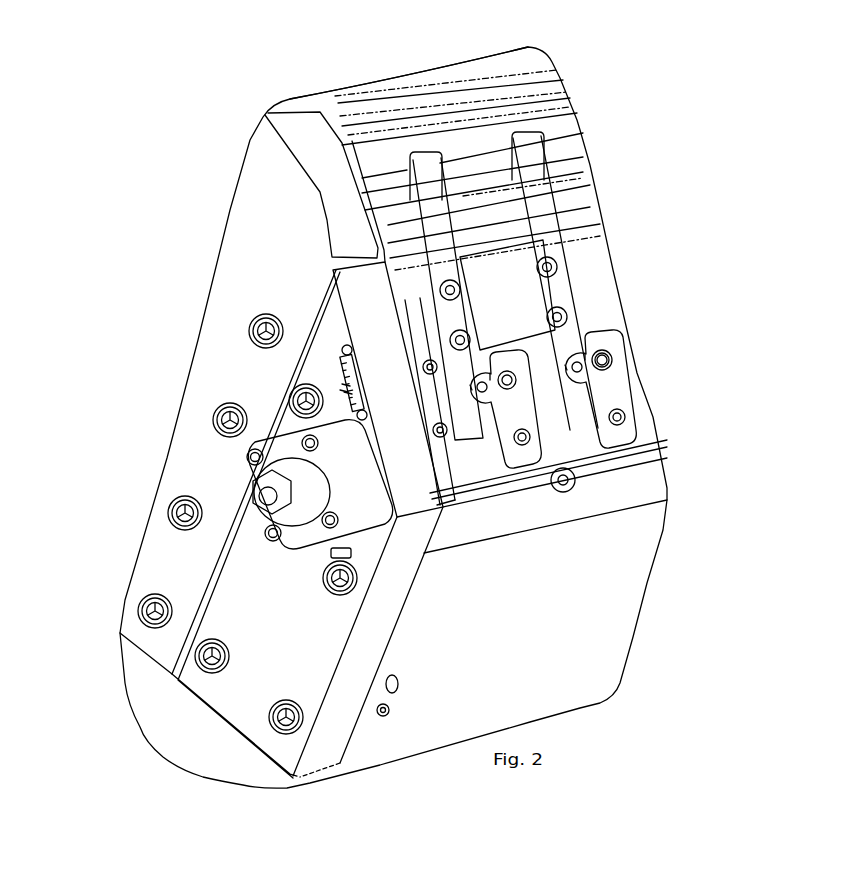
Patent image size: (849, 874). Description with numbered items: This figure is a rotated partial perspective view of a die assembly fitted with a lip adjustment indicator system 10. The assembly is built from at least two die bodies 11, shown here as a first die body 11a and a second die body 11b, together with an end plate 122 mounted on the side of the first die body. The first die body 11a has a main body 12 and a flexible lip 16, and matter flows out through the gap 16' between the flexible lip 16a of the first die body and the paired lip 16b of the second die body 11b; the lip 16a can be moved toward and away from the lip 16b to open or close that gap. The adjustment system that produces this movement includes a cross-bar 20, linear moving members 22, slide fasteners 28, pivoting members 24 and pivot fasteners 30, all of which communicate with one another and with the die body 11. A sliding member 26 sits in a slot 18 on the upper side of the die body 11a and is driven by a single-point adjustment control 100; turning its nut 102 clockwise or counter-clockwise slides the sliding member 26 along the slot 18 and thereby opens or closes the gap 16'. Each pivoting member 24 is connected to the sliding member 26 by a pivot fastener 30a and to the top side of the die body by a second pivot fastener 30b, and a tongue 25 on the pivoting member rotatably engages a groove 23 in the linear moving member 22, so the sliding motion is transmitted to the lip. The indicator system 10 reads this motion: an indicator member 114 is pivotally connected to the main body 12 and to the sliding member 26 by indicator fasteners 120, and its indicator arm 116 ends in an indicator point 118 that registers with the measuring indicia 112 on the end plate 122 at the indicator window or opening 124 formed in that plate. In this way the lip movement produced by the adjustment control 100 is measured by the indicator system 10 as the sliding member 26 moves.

The lip adjustment indicator system 10 is at (338, 313).
The die body 11 is at (590, 195).
The first die body 11a is at (592, 127).
The second die body 11b is at (333, 85).
The main body 12 is at (610, 680).
The lip 16 is at (499, 97).
The gap 16' is at (366, 96).
The flexible lip 16a is at (558, 92).
The lip 16b is at (547, 68).
The slot 18 is at (517, 483).
The cross-bar 20 is at (527, 147).
The linear moving member 22 is at (540, 208).
The groove 23 is at (483, 407).
The pivoting member 24 is at (633, 430).
The tongue 25 is at (483, 377).
The sliding member 26 is at (653, 417).
The slide fastener 28 is at (560, 260).
The pivot fastener 30 is at (613, 367).
The pivot fastener 30a is at (610, 353).
The second pivot fastener 30b is at (623, 410).
The single-point adjustment control 100 is at (243, 542).
The nut 102 is at (247, 490).
The measuring indicia 112 is at (357, 395).
The indicator member 114 is at (443, 510).
The indicator arm 116 is at (337, 395).
The indicator point 118 is at (340, 387).
The indicator fastener 120 is at (422, 360).
The end plate 122 is at (340, 730).
The indicator window or opening 124 is at (335, 392).